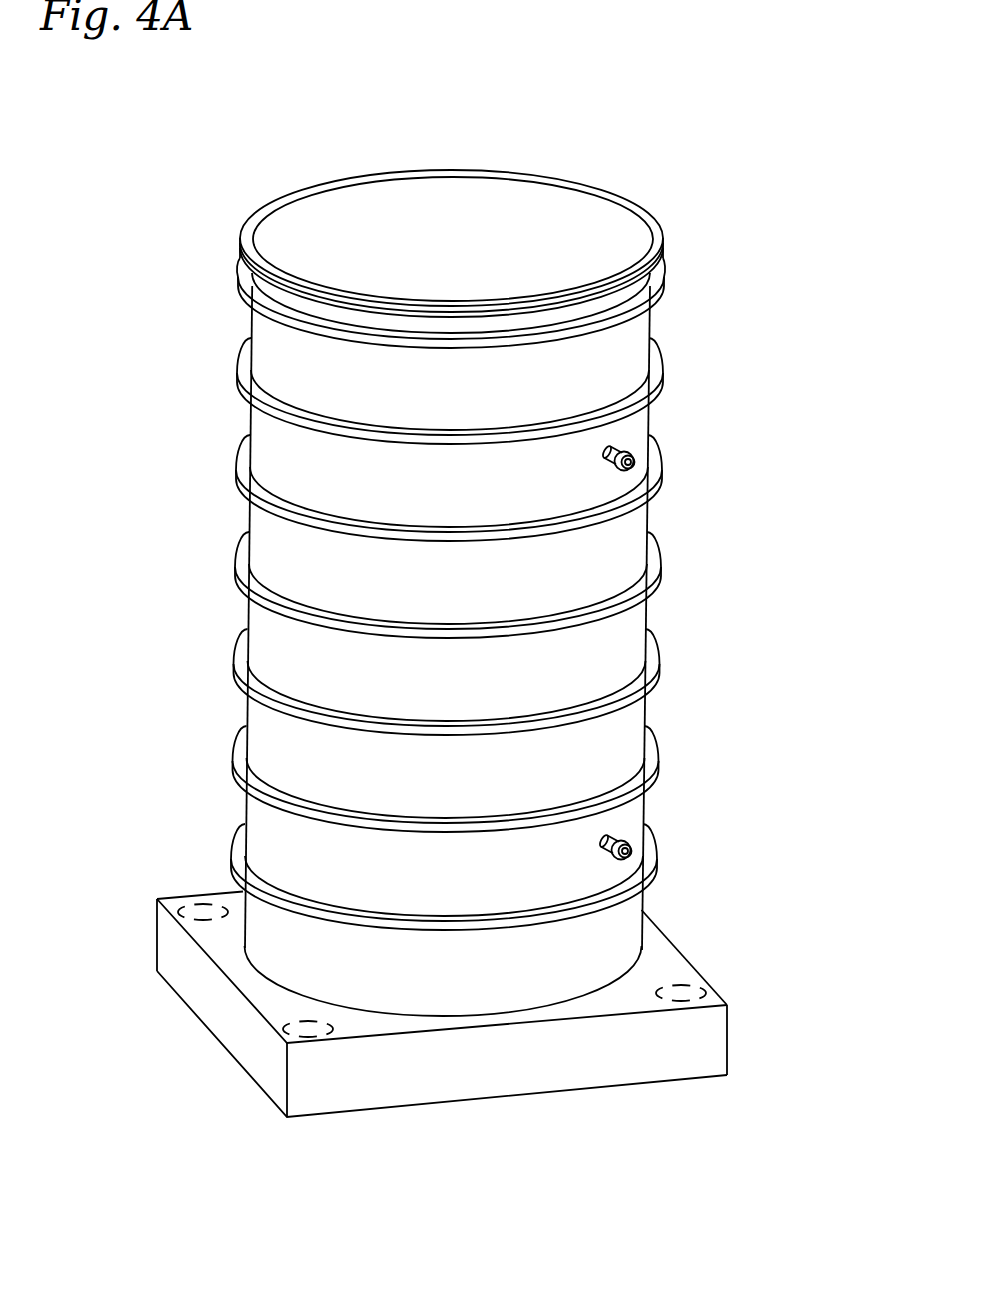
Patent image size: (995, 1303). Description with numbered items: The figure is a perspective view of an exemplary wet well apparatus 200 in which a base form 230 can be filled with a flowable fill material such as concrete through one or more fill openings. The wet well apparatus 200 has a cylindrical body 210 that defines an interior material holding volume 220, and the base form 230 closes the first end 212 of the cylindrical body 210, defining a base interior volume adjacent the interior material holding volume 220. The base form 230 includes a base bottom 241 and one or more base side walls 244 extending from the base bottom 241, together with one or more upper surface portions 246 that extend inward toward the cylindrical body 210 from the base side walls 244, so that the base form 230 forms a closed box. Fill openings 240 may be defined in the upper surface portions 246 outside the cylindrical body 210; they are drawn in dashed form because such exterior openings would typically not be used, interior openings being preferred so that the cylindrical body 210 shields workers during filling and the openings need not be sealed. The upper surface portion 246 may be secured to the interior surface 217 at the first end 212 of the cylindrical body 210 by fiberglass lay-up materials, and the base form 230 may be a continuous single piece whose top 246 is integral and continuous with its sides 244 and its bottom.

The wet well apparatus 200 is at (203, 418).
The cylindrical body 210 is at (653, 527).
The first end 212 is at (642, 943).
The interior surface 217 is at (317, 228).
The interior material holding volume 220 is at (535, 263).
The base form 230 is at (388, 1110).
The fill openings 240 is at (201, 900).
The base bottom 241 is at (550, 1091).
The base side walls 244 is at (203, 993).
The upper surface portions 246 is at (682, 973).